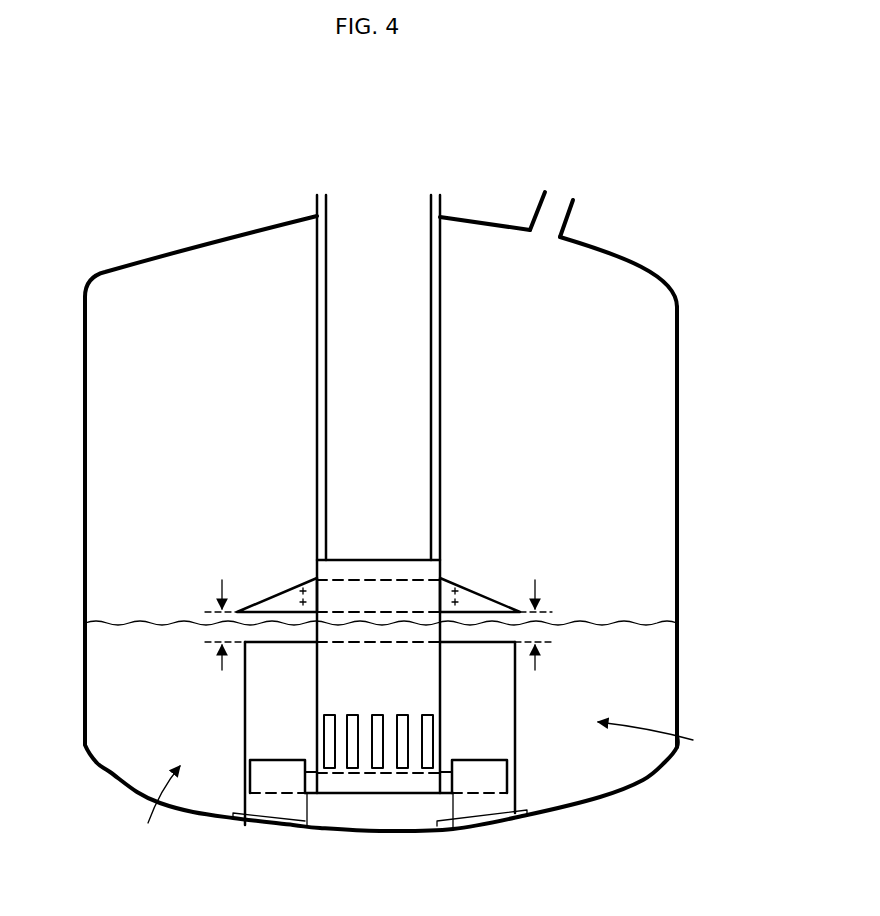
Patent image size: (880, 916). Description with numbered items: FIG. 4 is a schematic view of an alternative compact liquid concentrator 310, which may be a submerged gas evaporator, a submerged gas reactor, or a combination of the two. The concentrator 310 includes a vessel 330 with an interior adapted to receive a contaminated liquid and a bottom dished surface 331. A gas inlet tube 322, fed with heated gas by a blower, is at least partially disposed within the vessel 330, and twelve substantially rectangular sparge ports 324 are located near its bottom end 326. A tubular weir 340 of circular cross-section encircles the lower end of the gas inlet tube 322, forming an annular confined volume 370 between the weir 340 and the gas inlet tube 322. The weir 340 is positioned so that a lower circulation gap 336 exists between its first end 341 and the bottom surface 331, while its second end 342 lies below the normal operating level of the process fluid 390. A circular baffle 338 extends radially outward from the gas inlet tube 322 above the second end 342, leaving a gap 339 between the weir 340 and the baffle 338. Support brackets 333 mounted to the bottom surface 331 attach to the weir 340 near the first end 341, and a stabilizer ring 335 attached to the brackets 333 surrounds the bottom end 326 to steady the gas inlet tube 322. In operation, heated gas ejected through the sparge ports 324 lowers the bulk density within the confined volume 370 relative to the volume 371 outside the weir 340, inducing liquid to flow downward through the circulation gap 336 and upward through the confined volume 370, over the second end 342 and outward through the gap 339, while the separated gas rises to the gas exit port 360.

The compact liquid concentrator 310 is at (415, 501).
The gas inlet tube 322 is at (442, 402).
The sparge ports 324 is at (430, 745).
The bottom end of the gas inlet tube 326 is at (408, 797).
The vessel 330 is at (680, 470).
The bottom dished surface 331 is at (548, 822).
The support brackets 333 is at (308, 797).
The gas inlet tube stabilizer ring 335 is at (310, 797).
The lower circulation gap 336 is at (517, 800).
The baffle 338 is at (490, 596).
The gap 339 is at (205, 617).
The weir 340 is at (515, 690).
The first end of the weir 341 is at (515, 790).
The second end of the weir 342 is at (517, 644).
The gas exit port 360 is at (558, 198).
The confined volume 370 is at (300, 690).
The volume outside the weir 371 is at (411, 781).
The process fluid 390 is at (650, 625).